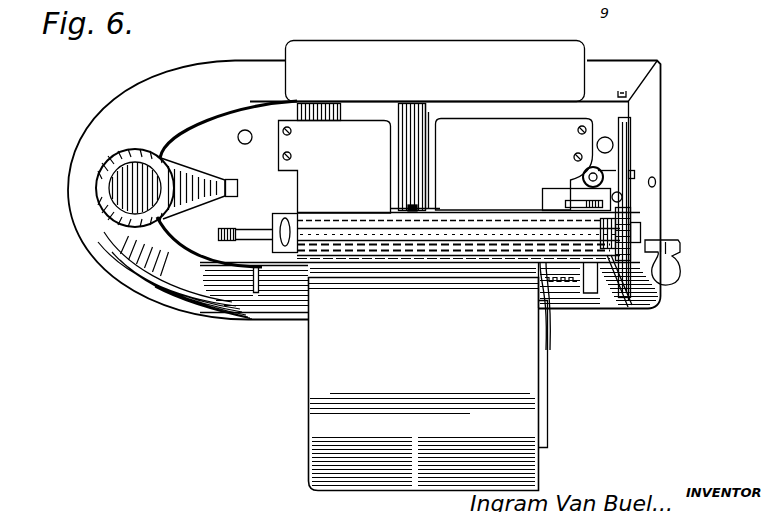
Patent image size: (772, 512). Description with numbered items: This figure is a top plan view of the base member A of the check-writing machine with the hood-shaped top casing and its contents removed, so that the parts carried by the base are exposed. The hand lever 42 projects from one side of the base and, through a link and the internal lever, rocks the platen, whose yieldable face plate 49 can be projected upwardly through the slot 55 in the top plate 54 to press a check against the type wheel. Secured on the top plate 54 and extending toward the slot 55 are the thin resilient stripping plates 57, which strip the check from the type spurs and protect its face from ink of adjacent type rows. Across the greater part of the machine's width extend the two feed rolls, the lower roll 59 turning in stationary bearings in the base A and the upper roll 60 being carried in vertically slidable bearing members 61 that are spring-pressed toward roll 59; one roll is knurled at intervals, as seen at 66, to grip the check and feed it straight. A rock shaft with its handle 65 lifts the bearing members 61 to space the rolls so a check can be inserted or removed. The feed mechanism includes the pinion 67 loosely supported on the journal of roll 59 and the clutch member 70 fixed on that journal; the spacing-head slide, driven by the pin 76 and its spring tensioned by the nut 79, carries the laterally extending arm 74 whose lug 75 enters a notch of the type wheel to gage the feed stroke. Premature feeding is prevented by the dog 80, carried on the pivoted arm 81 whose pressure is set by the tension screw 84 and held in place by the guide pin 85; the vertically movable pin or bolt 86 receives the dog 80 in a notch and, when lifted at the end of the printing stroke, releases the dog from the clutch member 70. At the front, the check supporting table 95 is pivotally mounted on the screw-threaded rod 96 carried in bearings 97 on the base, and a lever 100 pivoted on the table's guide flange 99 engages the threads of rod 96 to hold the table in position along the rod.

The base member A is at (197, 66).
The hand lever 42 is at (125, 186).
The top plate 54 is at (352, 112).
The face plate 49 is at (425, 120).
The slot 55 is at (428, 148).
The stripping plates 57 is at (446, 166).
The nut 79 is at (585, 175).
The laterally extending arm 74 is at (497, 212).
The lug 75 is at (420, 208).
The arm 81 is at (626, 136).
The tension screw 84 is at (636, 92).
The pin 76 is at (602, 172).
The dog 80 is at (632, 174).
The guide pin 85 is at (658, 184).
The pin or bolt 86 is at (630, 200).
The feed roll 60 is at (352, 236).
The milled or knurled portions 66 is at (420, 259).
The feed roll 59 is at (482, 258).
The bearing members 61 is at (278, 228).
The clutch member 70 is at (642, 232).
The handle 65 is at (680, 270).
The pinion 67 is at (628, 305).
The screw-threaded rod 96 is at (292, 284).
The bearings 97 is at (256, 295).
The check supporting table 95 is at (423, 380).
The lever 100 is at (546, 318).
The guide flange 99 is at (548, 417).